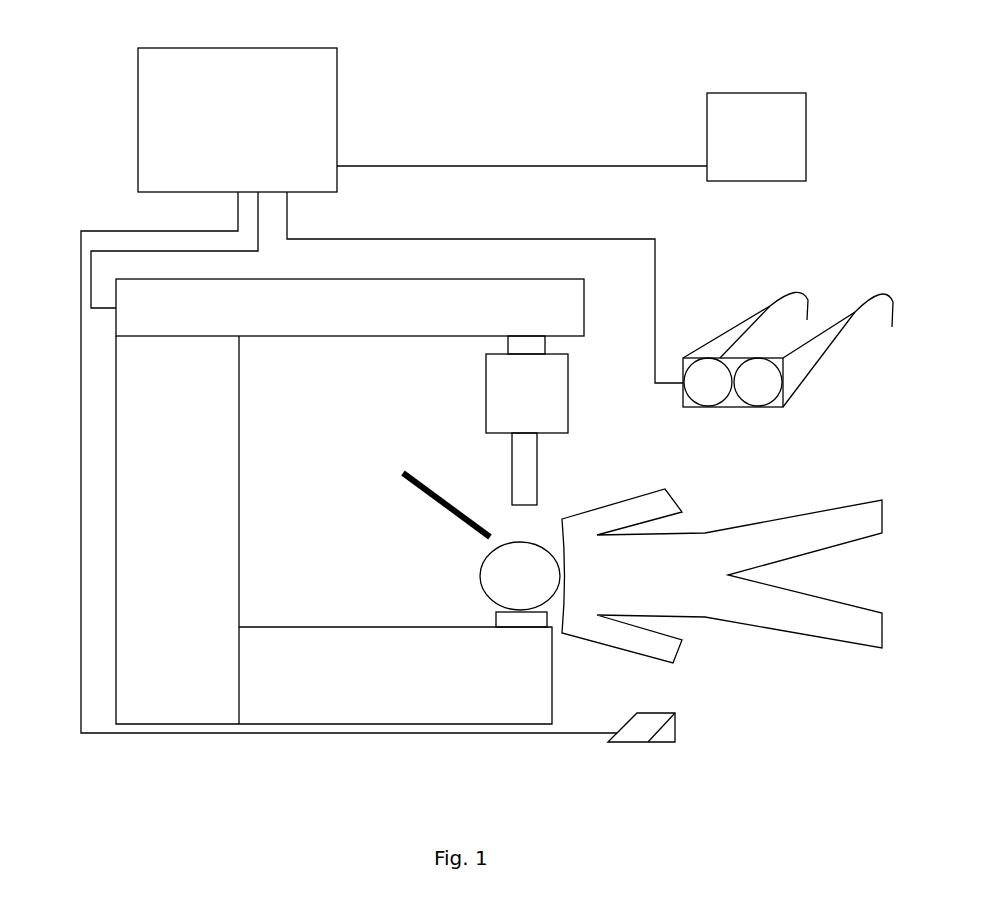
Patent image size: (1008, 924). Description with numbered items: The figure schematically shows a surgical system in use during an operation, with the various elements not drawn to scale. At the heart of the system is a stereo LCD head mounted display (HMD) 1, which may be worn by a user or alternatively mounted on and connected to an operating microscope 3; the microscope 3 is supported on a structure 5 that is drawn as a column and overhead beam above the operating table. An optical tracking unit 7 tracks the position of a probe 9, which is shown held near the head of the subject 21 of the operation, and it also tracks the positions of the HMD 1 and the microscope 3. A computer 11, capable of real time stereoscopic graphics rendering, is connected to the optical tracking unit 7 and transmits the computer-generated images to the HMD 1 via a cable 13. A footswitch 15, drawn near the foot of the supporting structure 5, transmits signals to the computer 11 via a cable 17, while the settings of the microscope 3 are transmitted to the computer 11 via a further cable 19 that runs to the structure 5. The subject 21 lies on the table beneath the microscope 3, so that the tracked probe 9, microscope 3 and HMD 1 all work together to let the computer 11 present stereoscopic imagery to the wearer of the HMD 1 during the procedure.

The head mounted display 1 is at (807, 262).
The operating microscope 3 is at (452, 408).
The structure 5 is at (239, 434).
The optical tracking unit 7 is at (707, 135).
The probe 9 is at (440, 507).
The computer 11 is at (337, 118).
The cable 13 is at (654, 310).
The footswitch 15 is at (687, 770).
The cable 17 is at (81, 362).
The cable 19 is at (138, 249).
The subject 21 is at (718, 487).